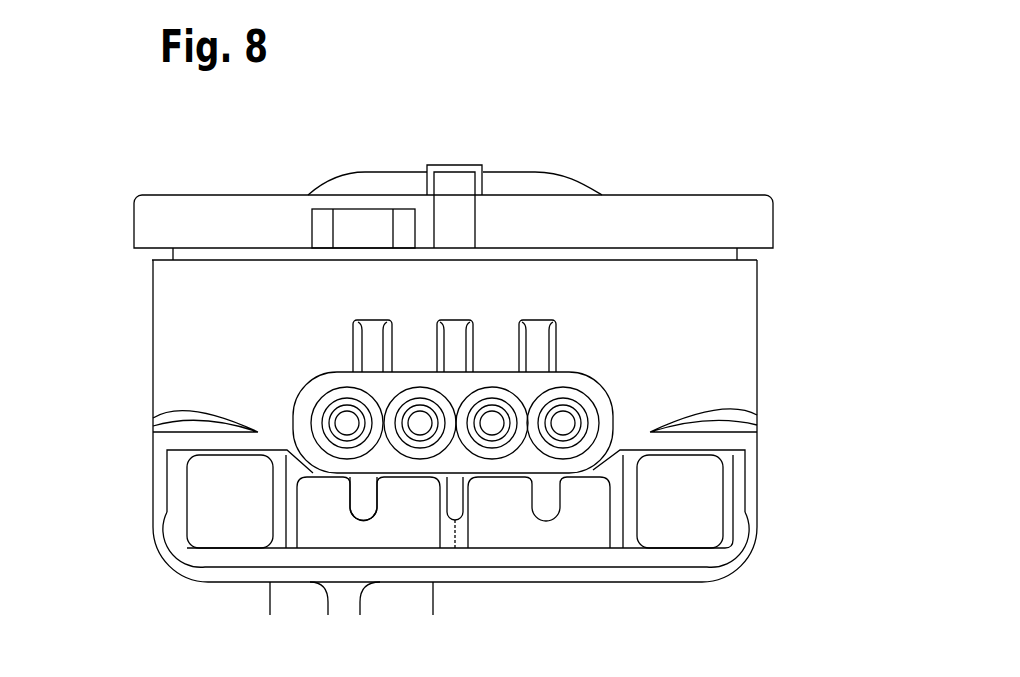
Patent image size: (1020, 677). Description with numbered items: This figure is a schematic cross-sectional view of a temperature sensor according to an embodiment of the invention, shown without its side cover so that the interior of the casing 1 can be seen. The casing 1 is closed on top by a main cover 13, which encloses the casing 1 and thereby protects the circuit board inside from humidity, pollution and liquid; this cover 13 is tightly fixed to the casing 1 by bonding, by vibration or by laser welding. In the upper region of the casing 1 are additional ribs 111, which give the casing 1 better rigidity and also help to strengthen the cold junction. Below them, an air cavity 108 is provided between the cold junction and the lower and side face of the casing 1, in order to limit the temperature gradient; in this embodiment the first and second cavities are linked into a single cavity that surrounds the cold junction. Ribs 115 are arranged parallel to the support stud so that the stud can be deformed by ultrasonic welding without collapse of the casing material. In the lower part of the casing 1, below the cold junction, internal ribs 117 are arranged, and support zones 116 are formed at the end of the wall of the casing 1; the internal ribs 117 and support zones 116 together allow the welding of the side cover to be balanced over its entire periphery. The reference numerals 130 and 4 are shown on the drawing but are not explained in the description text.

The casing 1 is at (772, 303).
The main cover 13 is at (714, 209).
The latch opening 130 is at (347, 224).
The additional ribs 111 is at (537, 334).
The contact 4 is at (584, 433).
The air cavity 108 is at (202, 487).
The ribs 115 is at (272, 505).
The support zones 116 is at (192, 554).
The internal ribs 117 is at (353, 508).